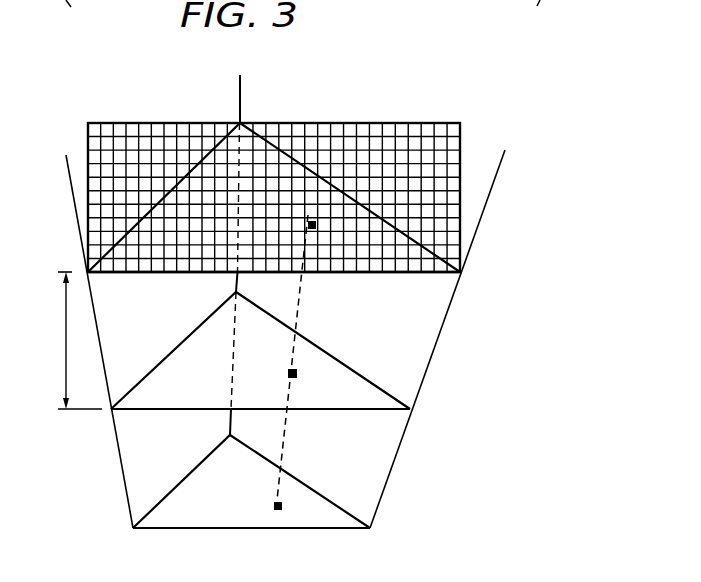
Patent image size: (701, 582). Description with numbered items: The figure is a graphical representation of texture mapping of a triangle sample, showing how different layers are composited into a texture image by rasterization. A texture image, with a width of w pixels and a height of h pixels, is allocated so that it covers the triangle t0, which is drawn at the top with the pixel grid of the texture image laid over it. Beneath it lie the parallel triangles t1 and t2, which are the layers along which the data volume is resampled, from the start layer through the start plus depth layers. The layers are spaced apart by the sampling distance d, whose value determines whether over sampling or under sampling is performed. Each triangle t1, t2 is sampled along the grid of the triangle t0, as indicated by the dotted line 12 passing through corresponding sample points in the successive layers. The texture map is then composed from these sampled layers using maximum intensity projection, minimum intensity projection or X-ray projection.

The dotted line 12 is at (302, 305).
The triangle t_o t0 is at (291, 274).
The parallel triangle t_1 t1 is at (276, 363).
The parallel triangle t_2 t2 is at (270, 487).
The sampling distance d is at (80, 340).